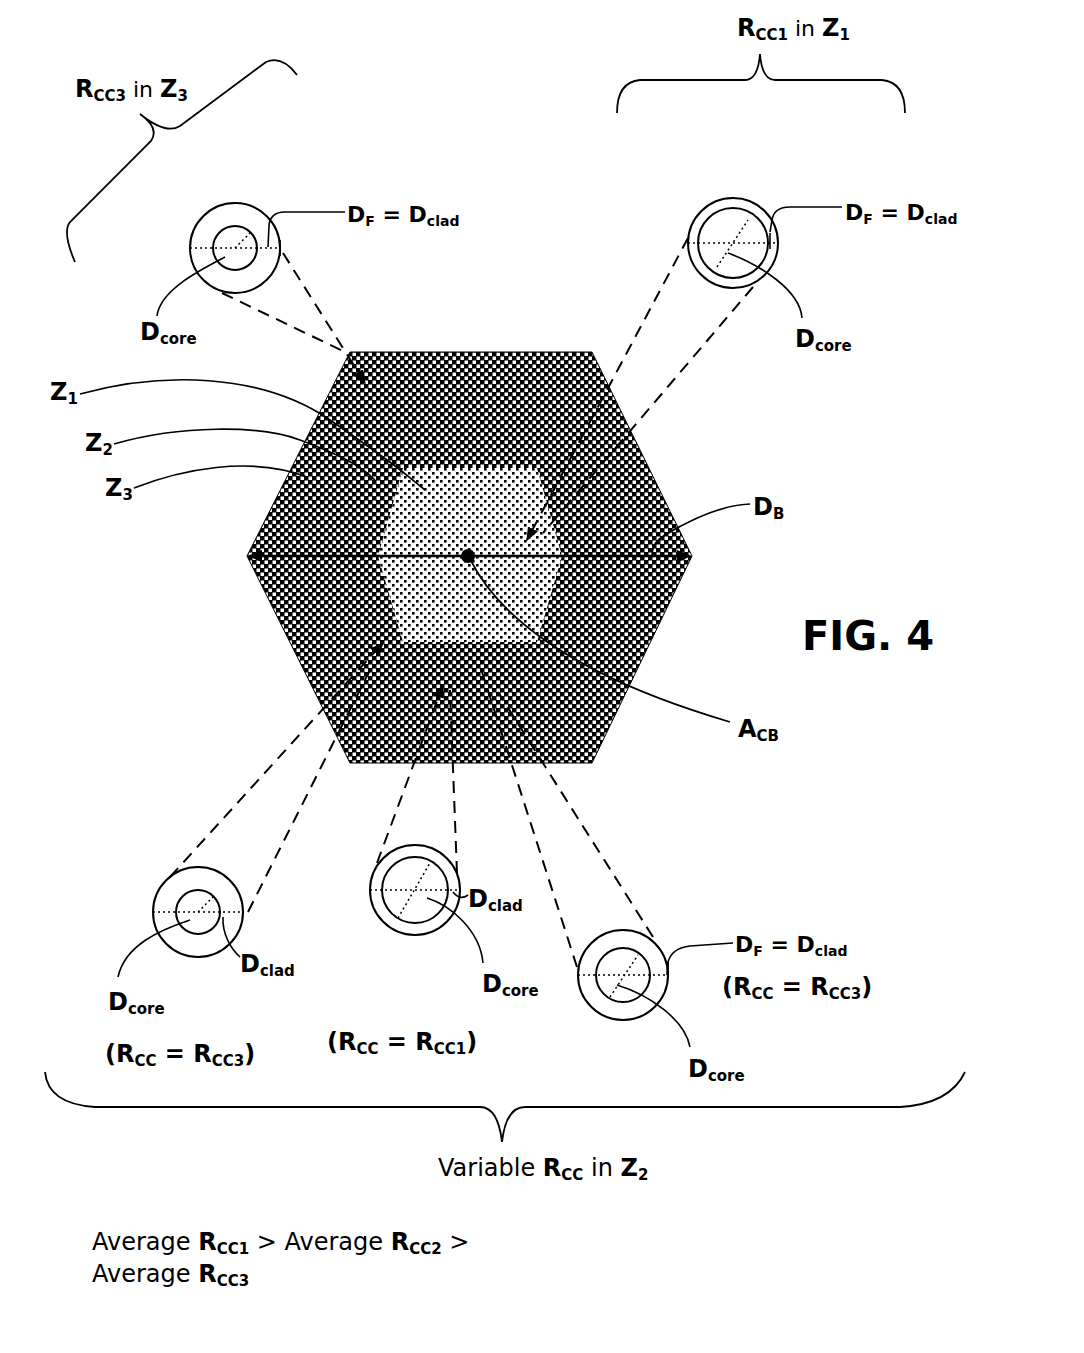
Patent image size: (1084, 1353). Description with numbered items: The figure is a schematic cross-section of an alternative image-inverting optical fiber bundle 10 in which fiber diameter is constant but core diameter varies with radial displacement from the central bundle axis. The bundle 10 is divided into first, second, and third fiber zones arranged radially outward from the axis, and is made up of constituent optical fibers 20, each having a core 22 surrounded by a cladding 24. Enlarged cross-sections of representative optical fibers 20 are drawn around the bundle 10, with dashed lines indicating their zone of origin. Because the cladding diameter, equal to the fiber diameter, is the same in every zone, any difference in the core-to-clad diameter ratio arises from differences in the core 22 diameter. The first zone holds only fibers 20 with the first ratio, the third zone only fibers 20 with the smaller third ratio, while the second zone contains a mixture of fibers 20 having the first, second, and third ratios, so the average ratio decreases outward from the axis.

The optical fiber bundle 10 is at (643, 457).
The optical fiber 20 is at (505, 625).
The core 22 is at (492, 570).
The cladding 24 is at (435, 613).